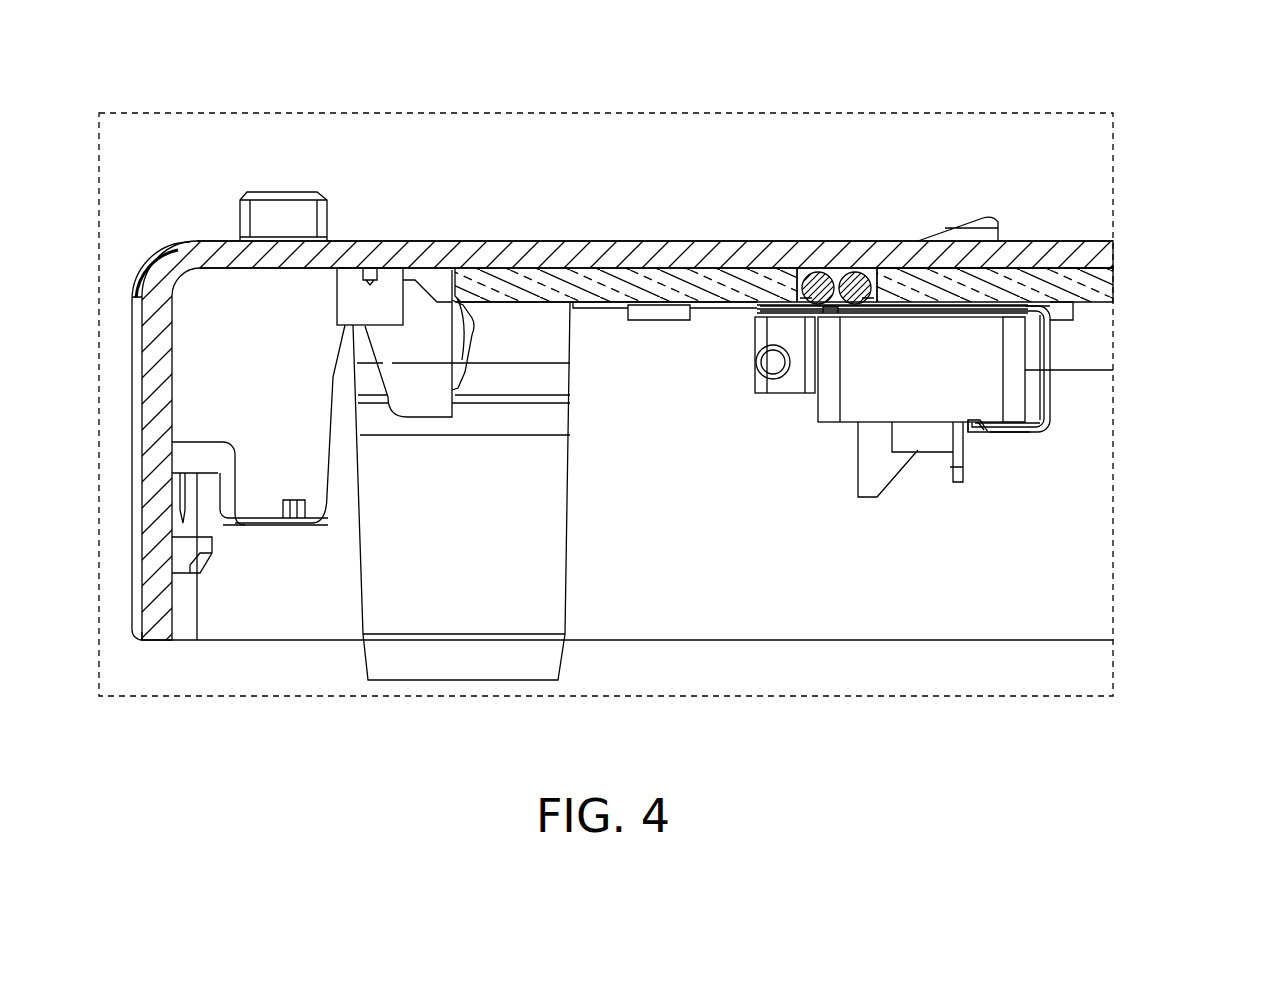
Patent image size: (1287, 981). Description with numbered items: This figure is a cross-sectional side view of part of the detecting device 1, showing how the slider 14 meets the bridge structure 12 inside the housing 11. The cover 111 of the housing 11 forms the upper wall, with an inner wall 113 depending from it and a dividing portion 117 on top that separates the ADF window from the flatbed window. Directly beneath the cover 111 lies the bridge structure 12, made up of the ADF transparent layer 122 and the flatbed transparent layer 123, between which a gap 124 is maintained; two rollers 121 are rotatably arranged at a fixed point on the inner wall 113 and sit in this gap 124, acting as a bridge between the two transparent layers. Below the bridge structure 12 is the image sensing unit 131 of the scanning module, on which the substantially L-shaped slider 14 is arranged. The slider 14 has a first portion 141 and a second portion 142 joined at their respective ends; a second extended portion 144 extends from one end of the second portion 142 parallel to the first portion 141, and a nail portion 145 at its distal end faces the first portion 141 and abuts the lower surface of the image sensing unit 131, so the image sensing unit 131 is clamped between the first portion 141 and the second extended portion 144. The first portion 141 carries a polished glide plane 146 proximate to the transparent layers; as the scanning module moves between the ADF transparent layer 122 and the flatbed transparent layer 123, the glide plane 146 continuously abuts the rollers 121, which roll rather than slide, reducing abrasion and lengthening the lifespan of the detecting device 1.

The detecting device 1 is at (137, 86).
The housing 11 is at (153, 243).
The cover 111 is at (402, 257).
The inner wall 113 is at (265, 272).
The dividing portion 117 is at (985, 219).
The bridge structure 12 is at (861, 217).
The roller 121 is at (833, 272).
The ADF transparent layer 122 is at (713, 283).
The flatbed transparent layer 123 is at (1100, 285).
The gap 124 is at (797, 268).
The image sensing unit 131 is at (877, 384).
The slider 14 is at (944, 352).
The first portion 141 is at (928, 312).
The second portion 142 is at (1050, 392).
The second extended portion 144 is at (1013, 433).
The nail portion 145 is at (980, 428).
The glide plane 146 is at (833, 310).